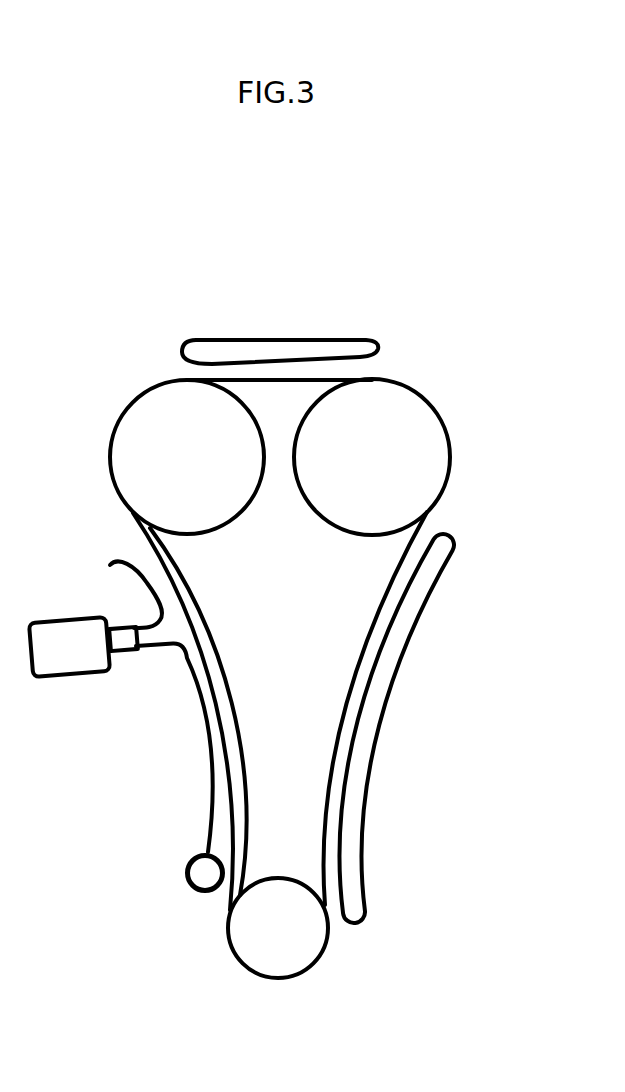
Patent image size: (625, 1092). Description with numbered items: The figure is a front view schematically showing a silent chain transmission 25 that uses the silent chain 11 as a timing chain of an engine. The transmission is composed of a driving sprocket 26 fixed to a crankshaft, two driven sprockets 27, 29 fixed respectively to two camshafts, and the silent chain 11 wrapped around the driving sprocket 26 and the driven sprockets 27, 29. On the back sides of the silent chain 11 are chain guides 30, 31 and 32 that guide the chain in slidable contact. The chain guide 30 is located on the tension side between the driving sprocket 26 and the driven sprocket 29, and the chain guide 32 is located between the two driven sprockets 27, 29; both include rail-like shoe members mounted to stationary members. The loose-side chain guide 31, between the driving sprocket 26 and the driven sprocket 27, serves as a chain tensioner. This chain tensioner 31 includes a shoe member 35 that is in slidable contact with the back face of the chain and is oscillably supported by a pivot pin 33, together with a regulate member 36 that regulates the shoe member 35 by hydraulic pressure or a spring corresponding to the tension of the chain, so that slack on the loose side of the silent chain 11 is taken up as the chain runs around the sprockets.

The silent chain 11 is at (385, 593).
The silent chain transmission 25 is at (460, 360).
The driving sprocket 26 is at (315, 965).
The driven sprocket 27 is at (140, 393).
The driven sprocket 29 is at (445, 422).
The chain guide 30 is at (398, 678).
The chain guide (chain tensioner) 31 is at (108, 563).
The chain guide 32 is at (333, 338).
The pivot pin 33 is at (190, 890).
The shoe member 35 is at (202, 718).
The regulate member 36 is at (53, 678).